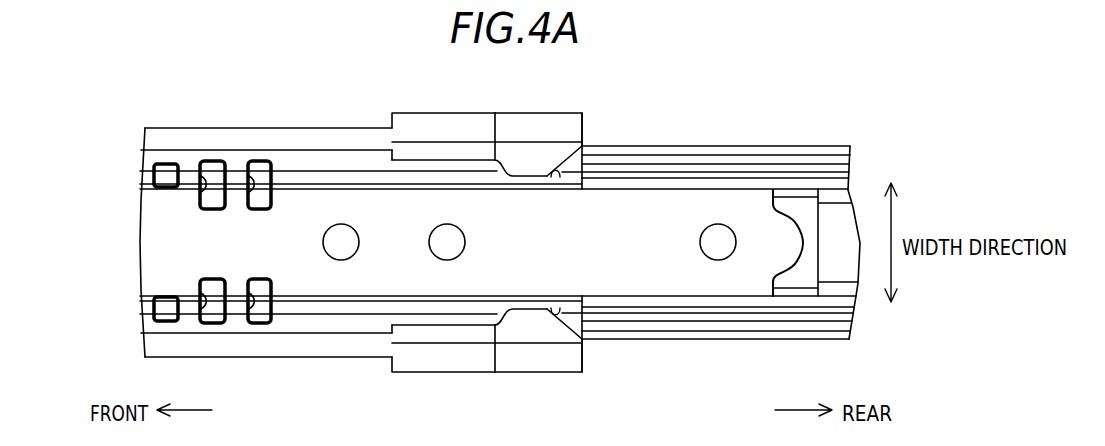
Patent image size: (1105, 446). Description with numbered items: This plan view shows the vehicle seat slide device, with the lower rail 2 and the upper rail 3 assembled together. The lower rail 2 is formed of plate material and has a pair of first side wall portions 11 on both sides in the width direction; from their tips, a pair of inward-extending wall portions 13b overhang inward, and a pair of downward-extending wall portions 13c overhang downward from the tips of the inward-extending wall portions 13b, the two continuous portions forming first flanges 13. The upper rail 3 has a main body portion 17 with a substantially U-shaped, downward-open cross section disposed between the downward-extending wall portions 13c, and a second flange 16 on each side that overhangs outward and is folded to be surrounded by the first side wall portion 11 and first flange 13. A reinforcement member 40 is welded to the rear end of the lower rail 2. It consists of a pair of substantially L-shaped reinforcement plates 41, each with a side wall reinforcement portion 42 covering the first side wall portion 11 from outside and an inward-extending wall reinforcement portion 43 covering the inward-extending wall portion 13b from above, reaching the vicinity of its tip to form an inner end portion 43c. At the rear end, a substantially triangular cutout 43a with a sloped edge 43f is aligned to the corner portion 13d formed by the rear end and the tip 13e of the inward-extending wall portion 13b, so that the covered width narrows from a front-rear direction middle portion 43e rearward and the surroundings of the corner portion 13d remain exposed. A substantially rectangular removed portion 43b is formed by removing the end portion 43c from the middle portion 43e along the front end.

The lower rail 2 is at (236, 126).
The upper rail 3 is at (766, 147).
The first side wall portion 11 is at (348, 127).
The first flange 13 is at (307, 162).
The inward-extending wall portion 13b is at (333, 320).
The downward-extending wall portion 13c is at (295, 295).
The corner portion 13d is at (577, 298).
The tip of the inward-extending wall portion 13e is at (465, 190).
The second flange 16 is at (628, 160).
The main body portion 17 is at (687, 203).
The reinforcement member 40 is at (646, 212).
The reinforcement plate 41 is at (578, 127).
The side wall reinforcement portion 42 is at (442, 113).
The inward-extending wall reinforcement portion 43 is at (531, 122).
The cutout 43a is at (558, 298).
The removed portion 43b is at (420, 323).
The end portion 43c is at (530, 300).
The front-rear direction middle portion 43e is at (495, 113).
The sloped edge 43f is at (556, 168).